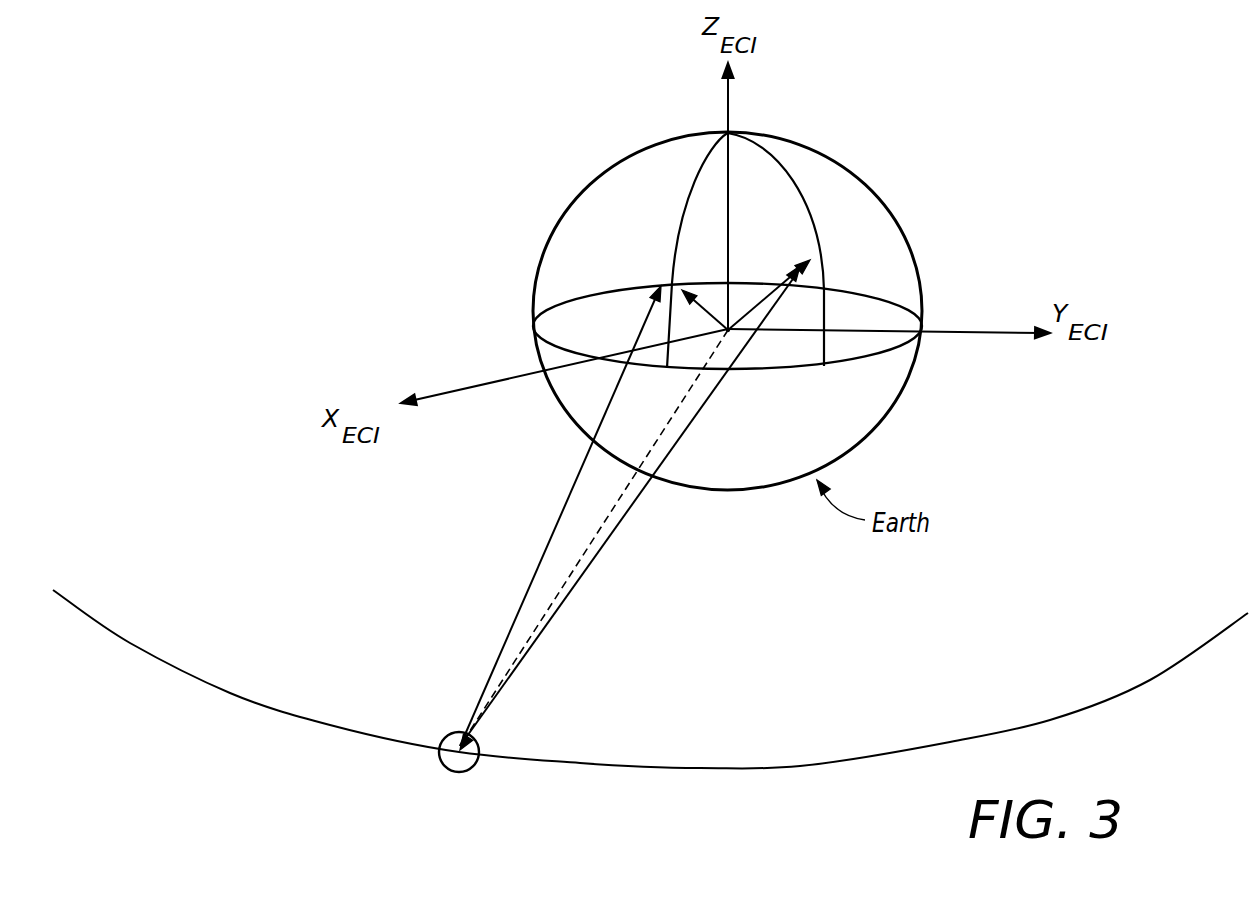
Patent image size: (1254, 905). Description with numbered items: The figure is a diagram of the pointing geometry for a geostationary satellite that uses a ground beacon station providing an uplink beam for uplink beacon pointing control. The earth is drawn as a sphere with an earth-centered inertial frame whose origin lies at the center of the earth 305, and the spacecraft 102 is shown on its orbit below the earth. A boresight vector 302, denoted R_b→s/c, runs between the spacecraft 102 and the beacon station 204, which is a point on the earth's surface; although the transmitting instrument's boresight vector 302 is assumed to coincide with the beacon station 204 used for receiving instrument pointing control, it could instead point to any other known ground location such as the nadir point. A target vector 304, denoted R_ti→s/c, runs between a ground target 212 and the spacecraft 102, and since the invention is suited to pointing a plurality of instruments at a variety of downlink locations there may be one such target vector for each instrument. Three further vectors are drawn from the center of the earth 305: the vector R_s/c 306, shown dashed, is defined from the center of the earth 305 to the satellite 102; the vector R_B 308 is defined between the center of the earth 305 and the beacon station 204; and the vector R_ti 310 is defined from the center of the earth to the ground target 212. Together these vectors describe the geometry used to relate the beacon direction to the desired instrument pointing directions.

The spacecraft 102 is at (459, 772).
The beacon station 204 is at (663, 273).
The ground target 212 is at (818, 255).
The boresight vector 302 is at (423, 485).
The target vector 304 is at (613, 533).
The center of the earth 305 is at (728, 330).
The vector R_s/c 306 is at (582, 558).
The vector R_B 308 is at (425, 278).
The vector R_ti 310 is at (817, 76).